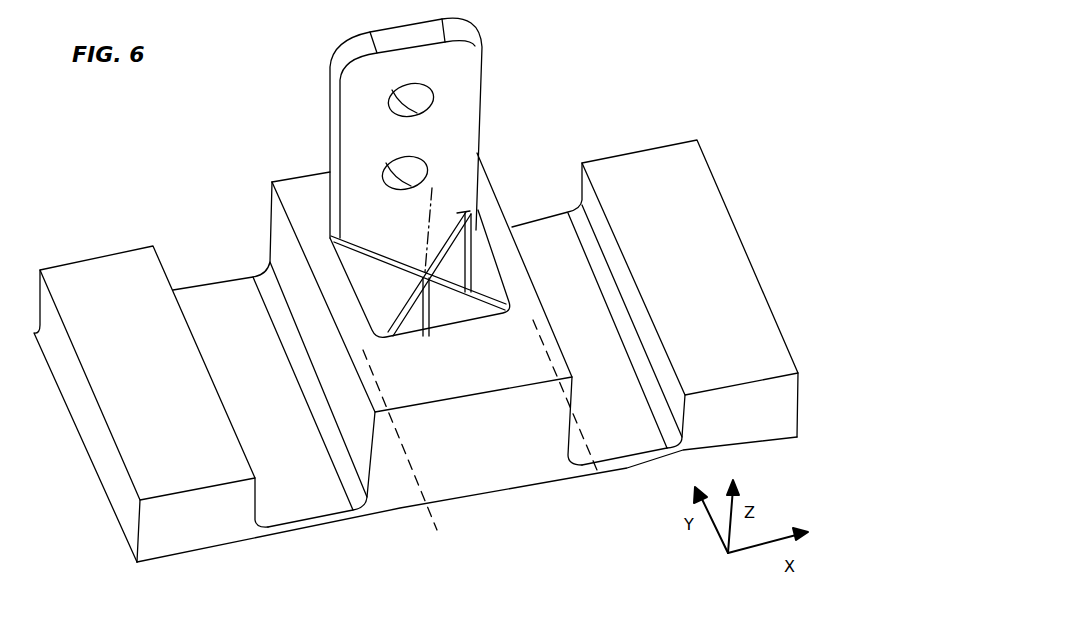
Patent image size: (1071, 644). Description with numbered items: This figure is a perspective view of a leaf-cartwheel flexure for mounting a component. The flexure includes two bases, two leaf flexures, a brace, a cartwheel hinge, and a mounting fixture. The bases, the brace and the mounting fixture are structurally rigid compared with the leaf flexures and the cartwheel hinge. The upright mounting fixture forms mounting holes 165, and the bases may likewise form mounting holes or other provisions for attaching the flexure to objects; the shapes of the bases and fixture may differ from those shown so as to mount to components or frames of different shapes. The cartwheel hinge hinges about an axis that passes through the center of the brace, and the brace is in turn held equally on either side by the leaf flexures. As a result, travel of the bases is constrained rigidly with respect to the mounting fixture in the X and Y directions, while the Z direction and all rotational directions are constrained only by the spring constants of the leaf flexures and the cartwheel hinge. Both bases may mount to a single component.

The mounting holes 165 is at (392, 176).